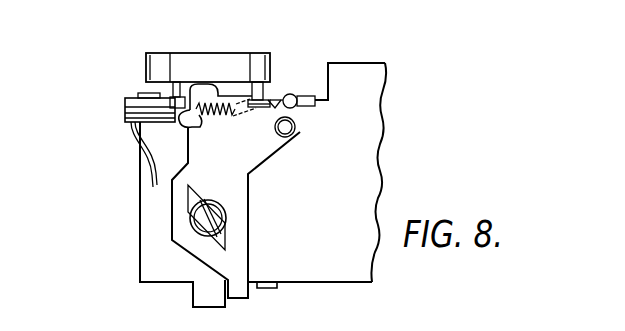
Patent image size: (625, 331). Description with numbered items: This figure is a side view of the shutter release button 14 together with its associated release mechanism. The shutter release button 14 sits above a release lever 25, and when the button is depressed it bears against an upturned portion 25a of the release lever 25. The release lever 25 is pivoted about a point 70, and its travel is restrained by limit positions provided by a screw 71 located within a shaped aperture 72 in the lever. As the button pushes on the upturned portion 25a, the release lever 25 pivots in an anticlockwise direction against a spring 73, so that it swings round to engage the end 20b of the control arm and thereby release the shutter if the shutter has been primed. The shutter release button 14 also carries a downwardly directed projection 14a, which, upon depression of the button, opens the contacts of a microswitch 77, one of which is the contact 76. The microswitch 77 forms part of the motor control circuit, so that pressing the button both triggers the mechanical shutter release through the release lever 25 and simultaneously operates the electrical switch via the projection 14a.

The shutter release button 14 is at (212, 65).
The downwardly directed projection 14a is at (262, 94).
The release lever 25 is at (244, 243).
The upturned portion 25a is at (198, 90).
The pivot point 70 is at (296, 128).
The screw 71 is at (222, 216).
The shaped aperture 72 is at (192, 197).
The spring 73 is at (215, 121).
The contact 76 is at (258, 110).
The microswitch 77 is at (127, 104).
The end of control arm 20b is at (272, 287).